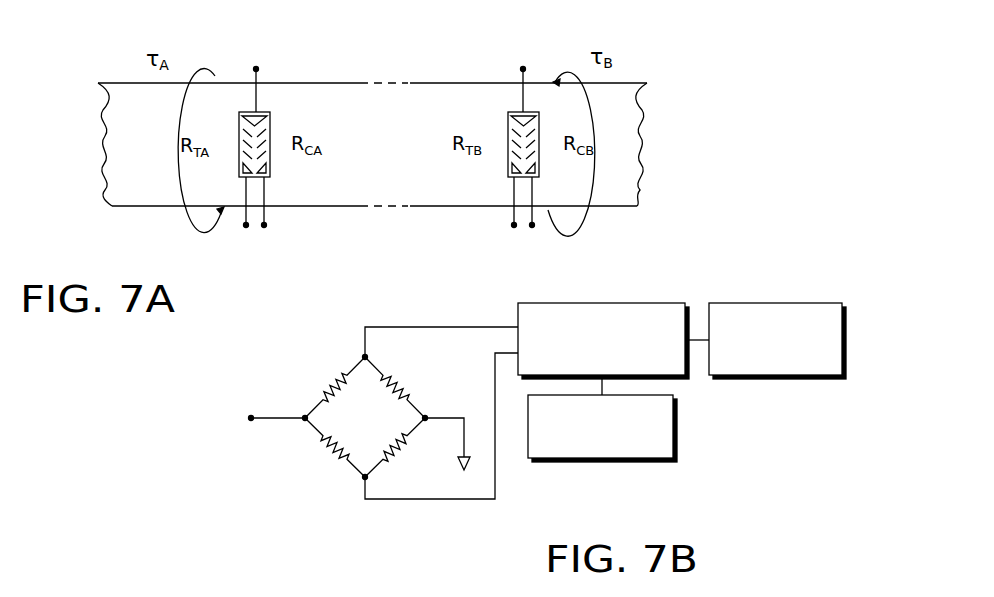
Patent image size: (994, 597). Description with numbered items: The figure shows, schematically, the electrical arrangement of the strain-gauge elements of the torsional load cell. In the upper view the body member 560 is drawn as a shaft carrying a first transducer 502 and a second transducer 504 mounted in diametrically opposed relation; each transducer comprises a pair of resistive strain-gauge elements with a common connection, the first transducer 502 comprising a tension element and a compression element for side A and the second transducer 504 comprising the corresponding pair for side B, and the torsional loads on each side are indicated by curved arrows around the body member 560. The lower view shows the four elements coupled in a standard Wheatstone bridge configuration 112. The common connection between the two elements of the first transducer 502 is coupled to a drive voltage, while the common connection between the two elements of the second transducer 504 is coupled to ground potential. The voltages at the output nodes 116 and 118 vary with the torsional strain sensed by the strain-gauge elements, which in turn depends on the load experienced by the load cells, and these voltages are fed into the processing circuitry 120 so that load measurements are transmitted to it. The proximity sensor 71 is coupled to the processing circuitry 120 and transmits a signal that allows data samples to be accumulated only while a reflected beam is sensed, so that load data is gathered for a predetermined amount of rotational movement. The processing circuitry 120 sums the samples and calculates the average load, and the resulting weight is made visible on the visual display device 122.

In FIG. 7A, the body member 560 is at (155, 158).
In FIG. 7A, the first transducer 502 is at (259, 112).
In FIG. 7A, the second transducer 504 is at (518, 112).
In FIG. 7B, the Wheatstone bridge configuration 112 is at (281, 333).
In FIG. 7B, the output node 116 is at (365, 357).
In FIG. 7B, the output node 118 is at (365, 477).
In FIG. 7B, the processing circuitry 120 is at (653, 303).
In FIG. 7B, the visual display device 122 is at (805, 303).
In FIG. 7B, the proximity sensor 71 is at (657, 460).